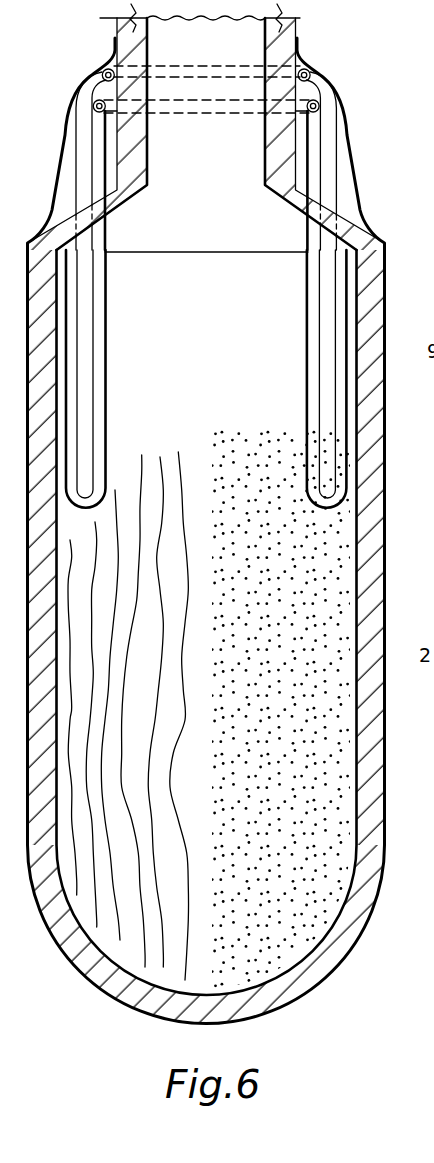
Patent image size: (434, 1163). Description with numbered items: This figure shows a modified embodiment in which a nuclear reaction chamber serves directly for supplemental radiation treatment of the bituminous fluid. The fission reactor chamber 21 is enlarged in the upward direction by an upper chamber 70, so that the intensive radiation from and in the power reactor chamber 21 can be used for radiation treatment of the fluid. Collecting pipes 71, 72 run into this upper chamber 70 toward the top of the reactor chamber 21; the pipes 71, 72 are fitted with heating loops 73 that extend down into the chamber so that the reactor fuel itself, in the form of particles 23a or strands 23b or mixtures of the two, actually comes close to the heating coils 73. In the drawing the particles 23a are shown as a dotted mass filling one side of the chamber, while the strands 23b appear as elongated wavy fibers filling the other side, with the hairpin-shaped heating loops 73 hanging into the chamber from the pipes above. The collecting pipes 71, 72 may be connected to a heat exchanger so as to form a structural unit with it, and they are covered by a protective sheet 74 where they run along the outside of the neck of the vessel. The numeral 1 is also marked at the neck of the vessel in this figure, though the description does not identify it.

The neck tube 1 is at (297, 33).
The collecting pipe 71 is at (312, 76).
The collecting pipe 72 is at (321, 108).
The protective sheet 74 is at (349, 148).
The upper chamber 70 is at (142, 280).
The heating loops 73 is at (105, 380).
The strands 23b is at (117, 484).
The particles 23a is at (240, 448).
The fission reactor chamber 21 is at (325, 590).